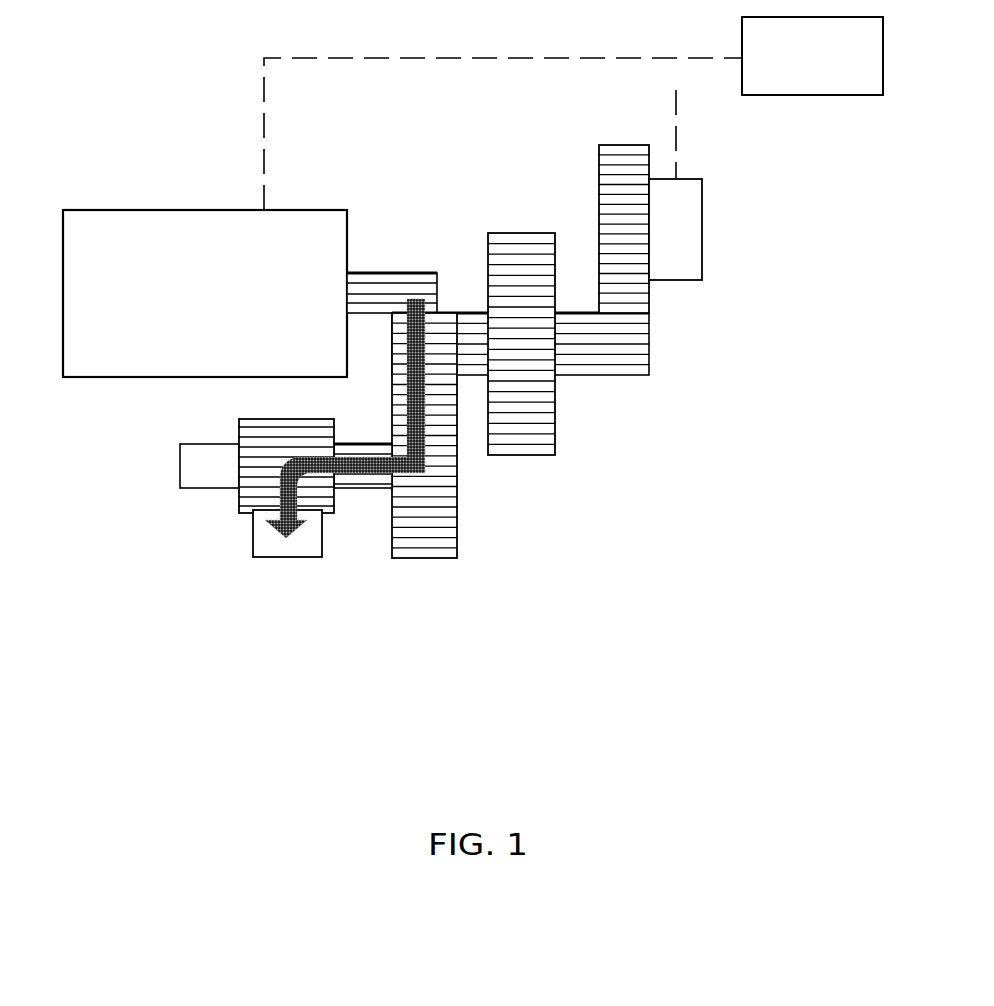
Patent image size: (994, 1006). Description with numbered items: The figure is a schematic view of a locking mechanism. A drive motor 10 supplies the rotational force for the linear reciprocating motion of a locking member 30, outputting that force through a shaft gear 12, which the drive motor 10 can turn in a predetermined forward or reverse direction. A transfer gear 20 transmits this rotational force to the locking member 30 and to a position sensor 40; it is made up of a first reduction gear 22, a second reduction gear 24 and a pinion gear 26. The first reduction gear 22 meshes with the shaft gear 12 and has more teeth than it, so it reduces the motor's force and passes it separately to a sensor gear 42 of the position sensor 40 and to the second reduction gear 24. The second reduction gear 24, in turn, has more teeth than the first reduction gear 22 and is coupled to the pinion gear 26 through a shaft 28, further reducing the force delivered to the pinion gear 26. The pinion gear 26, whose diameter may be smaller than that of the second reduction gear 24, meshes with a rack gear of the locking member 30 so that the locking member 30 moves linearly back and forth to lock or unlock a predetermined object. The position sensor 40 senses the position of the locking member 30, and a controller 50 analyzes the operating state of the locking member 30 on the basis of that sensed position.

The drive motor 10 is at (203, 210).
The shaft gear 12 is at (389, 273).
The transfer gear 20 is at (468, 217).
The first reduction gear 22 is at (600, 377).
The second reduction gear 24 is at (424, 558).
The pinion gear 26 is at (241, 513).
The shaft 28 is at (360, 444).
The locking member 30 is at (288, 557).
The position sensor 40 is at (683, 151).
The sensor gear 42 is at (622, 145).
The controller 50 is at (810, 97).